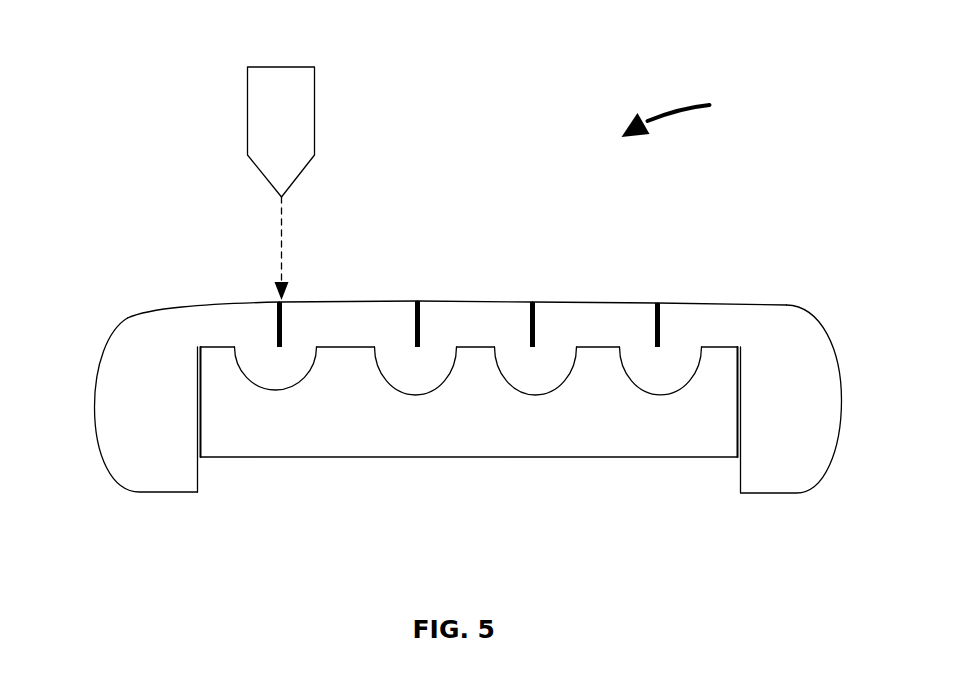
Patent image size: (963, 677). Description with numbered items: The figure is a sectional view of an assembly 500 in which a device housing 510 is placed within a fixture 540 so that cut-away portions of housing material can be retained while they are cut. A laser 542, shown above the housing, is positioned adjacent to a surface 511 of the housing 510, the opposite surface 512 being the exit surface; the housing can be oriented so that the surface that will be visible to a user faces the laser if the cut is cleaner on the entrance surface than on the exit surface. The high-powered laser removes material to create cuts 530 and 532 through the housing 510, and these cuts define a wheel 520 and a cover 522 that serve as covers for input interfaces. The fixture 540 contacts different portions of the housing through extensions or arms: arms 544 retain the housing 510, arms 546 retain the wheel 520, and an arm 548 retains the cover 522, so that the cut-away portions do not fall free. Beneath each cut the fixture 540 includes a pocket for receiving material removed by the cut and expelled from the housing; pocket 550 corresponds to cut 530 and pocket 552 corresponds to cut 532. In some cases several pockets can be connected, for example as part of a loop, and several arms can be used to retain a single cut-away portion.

The assembly 500 is at (697, 115).
The housing 510 is at (142, 388).
The surface 511 is at (175, 307).
The surface 512 is at (672, 351).
The wheel 520 is at (382, 325).
The cover 522 is at (502, 333).
The cut 530 is at (277, 296).
The cut 532 is at (418, 302).
The fixture 540 is at (725, 435).
The laser 542 is at (247, 115).
The arms 544 is at (223, 367).
The arms 546 is at (348, 360).
The arm 548 is at (482, 353).
The pocket 550 is at (277, 368).
The pocket 552 is at (415, 375).